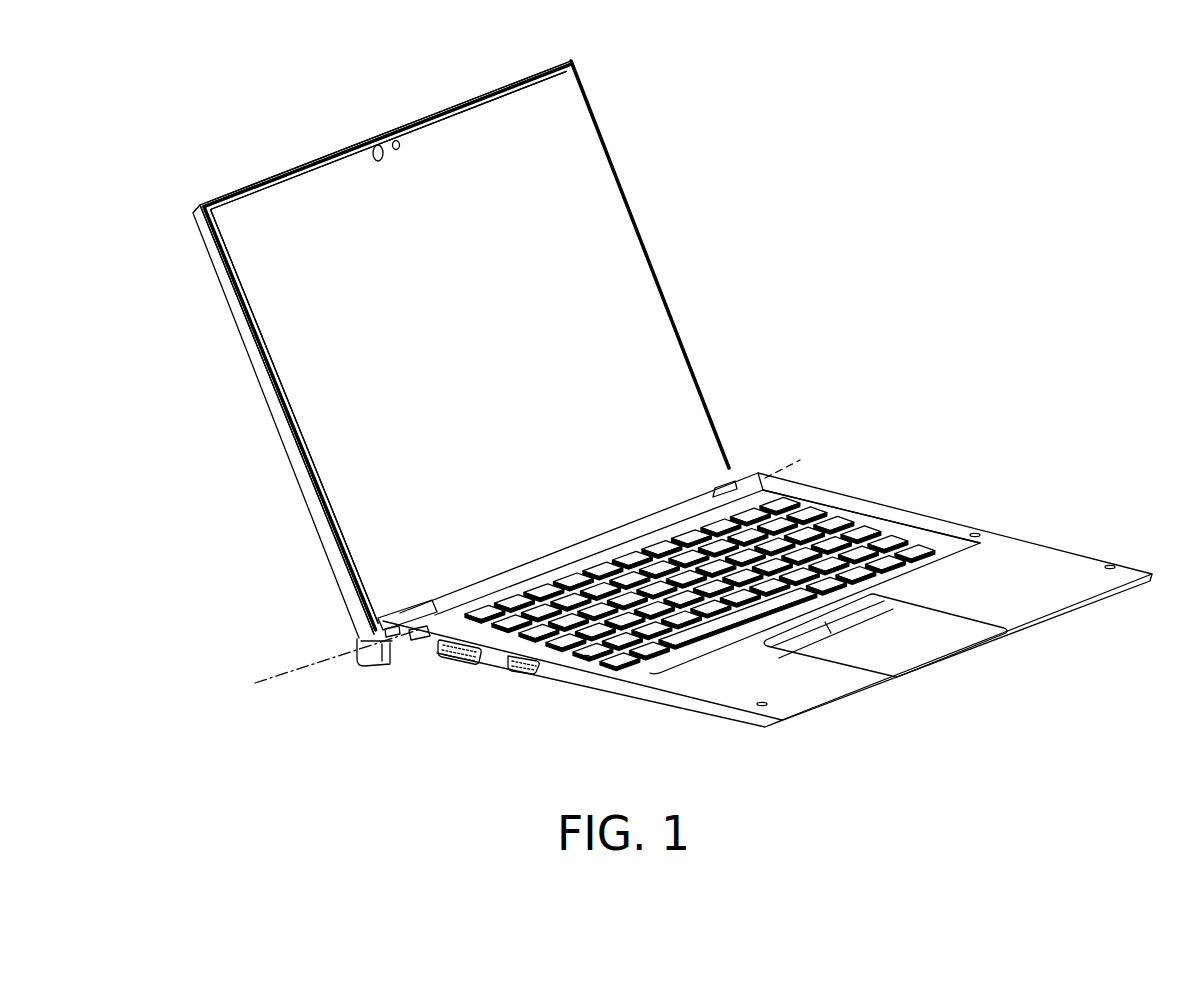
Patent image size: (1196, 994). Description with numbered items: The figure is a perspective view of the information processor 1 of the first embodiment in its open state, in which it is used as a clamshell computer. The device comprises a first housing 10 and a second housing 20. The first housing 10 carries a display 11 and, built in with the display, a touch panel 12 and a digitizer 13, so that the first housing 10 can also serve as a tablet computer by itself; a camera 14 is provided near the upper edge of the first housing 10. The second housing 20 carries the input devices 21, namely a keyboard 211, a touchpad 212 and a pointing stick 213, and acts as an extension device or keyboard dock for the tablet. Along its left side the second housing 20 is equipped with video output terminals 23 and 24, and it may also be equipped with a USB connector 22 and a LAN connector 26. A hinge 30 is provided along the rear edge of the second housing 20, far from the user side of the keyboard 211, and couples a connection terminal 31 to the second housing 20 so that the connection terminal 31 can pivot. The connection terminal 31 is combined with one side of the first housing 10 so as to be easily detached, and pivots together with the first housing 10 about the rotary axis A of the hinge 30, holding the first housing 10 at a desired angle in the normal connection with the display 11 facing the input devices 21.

The information processor 1 is at (761, 246).
The first housing 10 is at (695, 370).
The display 11 is at (613, 247).
The touch panel 12 is at (587, 178).
The digitizer 13 is at (389, 347).
The camera 14 is at (383, 138).
The second housing 20 is at (1040, 547).
The input device 21 is at (893, 508).
The keyboard 211 is at (812, 536).
The touchpad 212 is at (940, 637).
The pointing stick 213 is at (720, 600).
The USB connector 22 is at (870, 494).
The video output terminal 23 is at (462, 666).
The video output terminal 24 is at (522, 676).
The LAN connector 26 is at (805, 478).
The hinge 30 is at (431, 600).
The connection terminal 31 is at (372, 668).
The rotary axis A is at (300, 656).